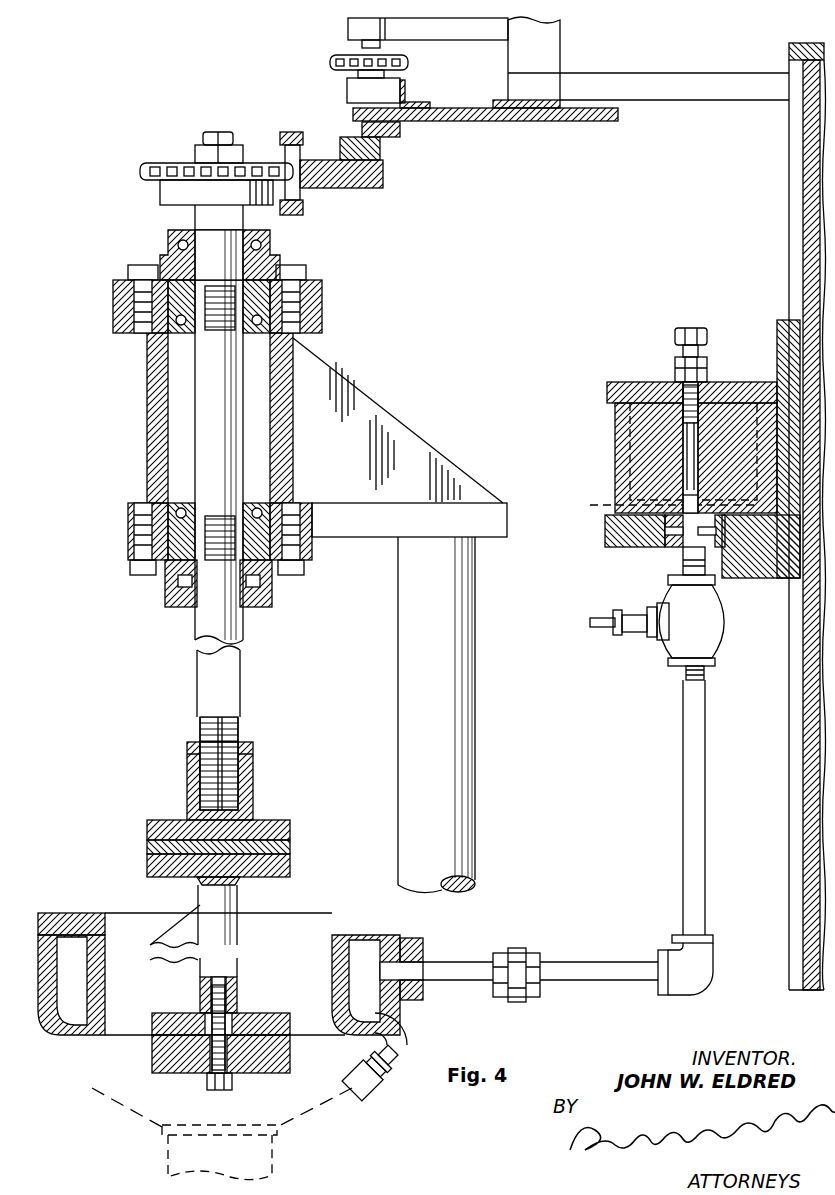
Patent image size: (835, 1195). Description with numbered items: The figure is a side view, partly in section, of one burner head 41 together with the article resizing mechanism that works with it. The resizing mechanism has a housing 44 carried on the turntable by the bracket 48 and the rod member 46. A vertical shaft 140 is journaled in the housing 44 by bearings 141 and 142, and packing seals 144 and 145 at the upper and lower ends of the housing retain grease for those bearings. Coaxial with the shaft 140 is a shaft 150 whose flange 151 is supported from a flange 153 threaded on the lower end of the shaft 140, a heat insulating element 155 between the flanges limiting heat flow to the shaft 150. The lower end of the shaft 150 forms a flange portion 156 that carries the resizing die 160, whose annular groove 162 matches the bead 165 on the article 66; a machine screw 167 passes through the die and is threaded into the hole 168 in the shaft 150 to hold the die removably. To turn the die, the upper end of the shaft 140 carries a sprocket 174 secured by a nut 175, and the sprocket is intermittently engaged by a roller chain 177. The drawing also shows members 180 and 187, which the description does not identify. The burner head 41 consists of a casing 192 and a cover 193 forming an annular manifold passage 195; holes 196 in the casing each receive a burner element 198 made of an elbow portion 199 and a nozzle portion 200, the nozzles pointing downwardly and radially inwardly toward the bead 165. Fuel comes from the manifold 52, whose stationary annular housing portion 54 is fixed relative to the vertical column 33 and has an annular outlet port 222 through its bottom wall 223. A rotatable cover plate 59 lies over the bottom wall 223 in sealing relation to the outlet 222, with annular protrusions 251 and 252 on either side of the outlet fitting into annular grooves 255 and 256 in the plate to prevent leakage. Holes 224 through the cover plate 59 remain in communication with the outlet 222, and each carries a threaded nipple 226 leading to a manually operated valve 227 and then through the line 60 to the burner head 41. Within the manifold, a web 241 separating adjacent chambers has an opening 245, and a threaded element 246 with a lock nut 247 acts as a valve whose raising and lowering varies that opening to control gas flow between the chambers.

The sprocket 174 is at (142, 172).
The nut 175 is at (196, 152).
The roller chain 177 is at (294, 132).
The arm 187 is at (472, 34).
The support beam 180 is at (638, 71).
The packing seal 144 is at (268, 257).
The bearing 141 is at (270, 372).
The housing 44 is at (146, 424).
The bracket 48 is at (428, 451).
The bearing 142 is at (291, 502).
The packing seal 145 is at (272, 597).
The vertical shaft 140 is at (241, 679).
The rod member 46 is at (471, 637).
The flange 153 is at (254, 809).
The heat insulating element 155 is at (288, 846).
The flange 151 is at (288, 866).
The shaft 150 is at (237, 894).
The burner head 41 is at (54, 910).
The cover 193 is at (87, 913).
The casing 192 is at (98, 954).
The annular manifold passage 195 is at (92, 977).
The hole 168 is at (236, 996).
The flange portion 156 is at (266, 1013).
The hole 196 is at (366, 1008).
The burner element 198 is at (401, 1026).
The resizing die 160 is at (288, 1054).
The annular groove 162 is at (266, 1070).
The machine screw 167 is at (226, 1088).
The bead 165 is at (252, 1124).
The article 66 is at (278, 1150).
The elbow portion 199 is at (388, 1075).
The nozzle portion 200 is at (357, 1092).
The threaded element 246 is at (674, 334).
The lock nut 247 is at (704, 364).
The web 241 is at (725, 382).
The stationary annular housing portion 54 is at (604, 396).
The manifold 52 is at (610, 431).
The opening 245 is at (690, 520).
The annular outlet port 222 is at (686, 535).
The bottom wall 223 is at (652, 505).
The rotatable cover plate 59 is at (604, 528).
The annular protrusion 251 is at (638, 548).
The annular groove 255 is at (673, 553).
The annular groove 256 is at (718, 546).
The hole 224 is at (705, 572).
The annular protrusion 252 is at (742, 580).
The threaded nipple 226 is at (664, 600).
The manually operated valve 227 is at (706, 630).
The vertical column 33 is at (786, 684).
The line 60 is at (702, 760).